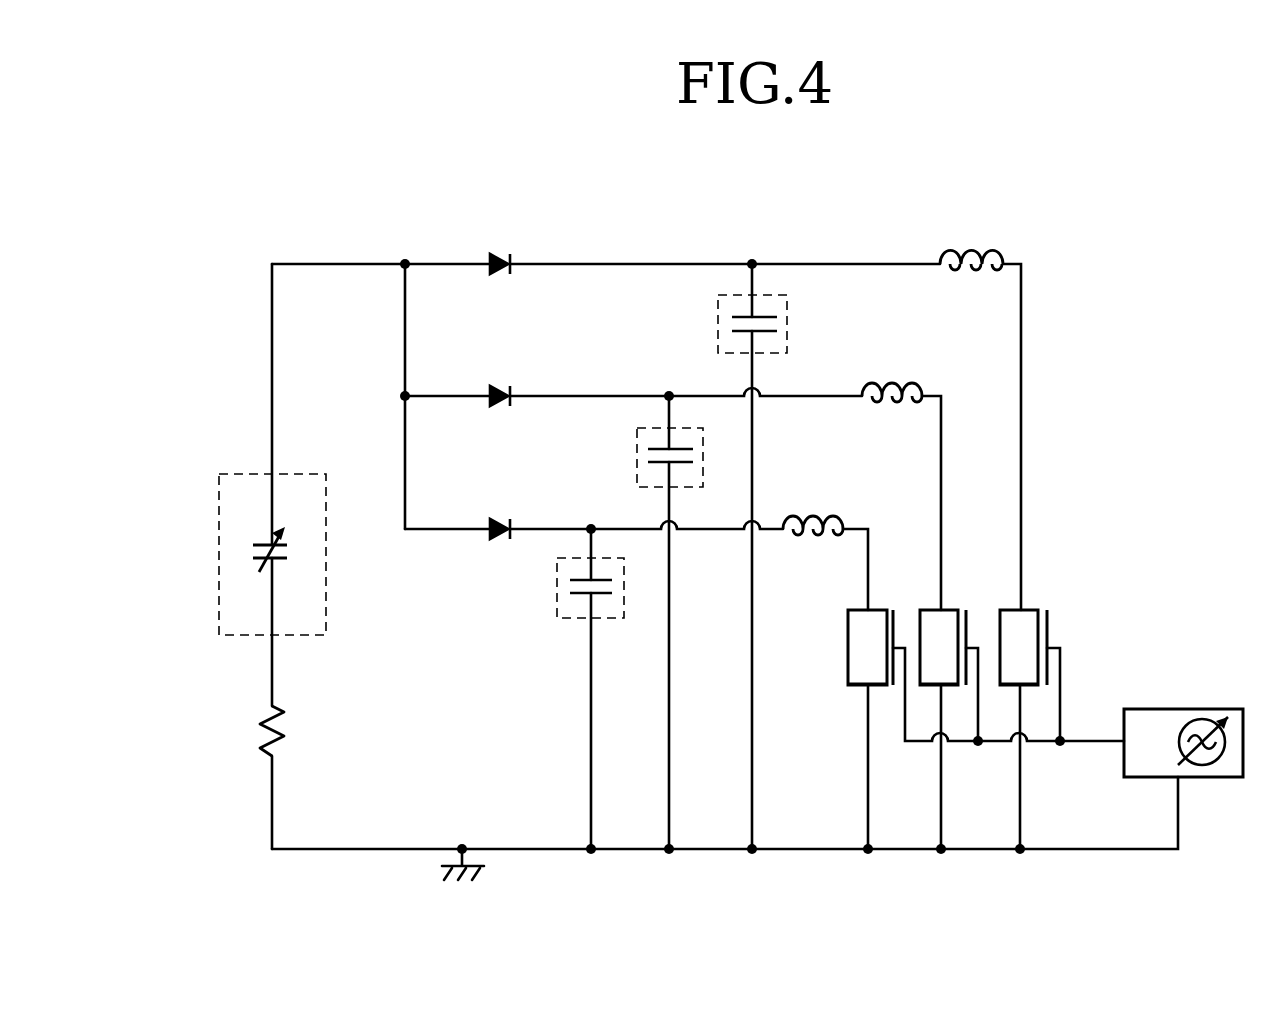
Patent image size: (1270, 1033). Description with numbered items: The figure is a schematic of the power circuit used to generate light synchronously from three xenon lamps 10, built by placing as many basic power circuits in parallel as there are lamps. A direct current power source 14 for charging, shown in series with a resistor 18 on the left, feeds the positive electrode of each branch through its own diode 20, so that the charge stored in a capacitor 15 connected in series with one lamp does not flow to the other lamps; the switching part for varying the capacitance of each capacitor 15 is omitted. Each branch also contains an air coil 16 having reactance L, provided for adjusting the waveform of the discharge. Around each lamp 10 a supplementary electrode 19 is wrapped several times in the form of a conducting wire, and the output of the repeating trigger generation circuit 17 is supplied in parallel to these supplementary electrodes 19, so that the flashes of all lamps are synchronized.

The xenon lamp 10 is at (878, 610).
The direct current power source 14 is at (243, 473).
The capacitor 15 is at (563, 558).
The air coil 16 is at (857, 497).
The repeating trigger generation circuit 17 is at (1190, 708).
The resistor 18 is at (282, 717).
The supplementary electrode 19 is at (946, 687).
The diode 20 is at (488, 523).